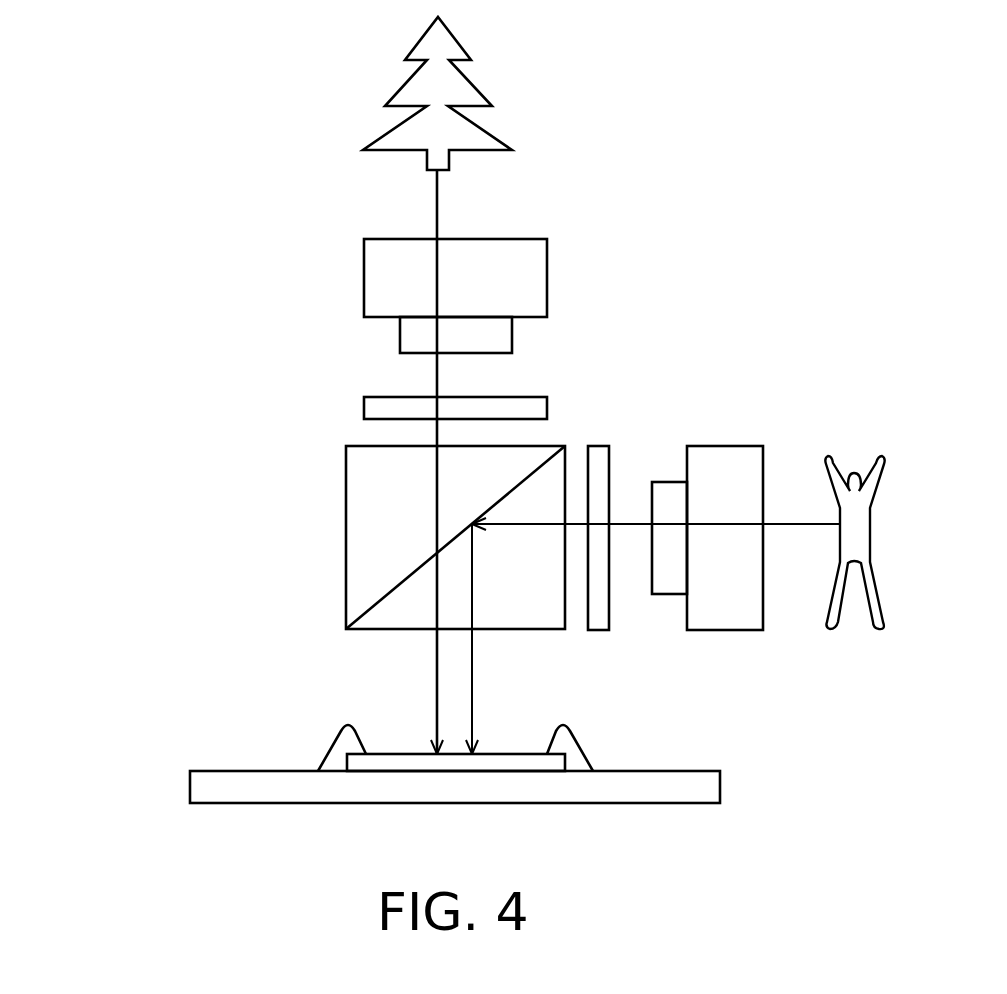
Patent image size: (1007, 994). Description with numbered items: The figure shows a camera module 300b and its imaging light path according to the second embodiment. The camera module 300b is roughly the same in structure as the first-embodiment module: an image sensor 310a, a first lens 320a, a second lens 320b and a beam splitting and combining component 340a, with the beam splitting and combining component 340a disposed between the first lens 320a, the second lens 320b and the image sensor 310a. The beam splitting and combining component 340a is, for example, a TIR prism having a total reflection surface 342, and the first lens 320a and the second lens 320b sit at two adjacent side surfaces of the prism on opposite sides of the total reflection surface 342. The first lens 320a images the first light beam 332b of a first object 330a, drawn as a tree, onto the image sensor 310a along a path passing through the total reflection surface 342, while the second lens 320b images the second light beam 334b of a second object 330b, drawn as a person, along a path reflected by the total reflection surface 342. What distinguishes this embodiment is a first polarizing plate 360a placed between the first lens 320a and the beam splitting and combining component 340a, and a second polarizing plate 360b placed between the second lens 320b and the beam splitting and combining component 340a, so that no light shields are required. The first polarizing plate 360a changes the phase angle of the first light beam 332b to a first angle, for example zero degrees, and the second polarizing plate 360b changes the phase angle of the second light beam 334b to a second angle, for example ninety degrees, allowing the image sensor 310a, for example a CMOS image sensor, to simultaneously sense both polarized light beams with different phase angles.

The camera module 300b is at (743, 707).
The image sensor 310a is at (465, 763).
The first lens 320a is at (509, 257).
The second lens 320b is at (731, 468).
The first object 330a is at (478, 88).
The second object 330b is at (870, 522).
The first light beam 332b is at (436, 193).
The second light beam 334b is at (795, 524).
The beam splitting and combining component 340a is at (400, 532).
The total reflection surface 342 is at (395, 587).
The first polarizing plate 360a is at (413, 410).
The second polarizing plate 360b is at (600, 493).